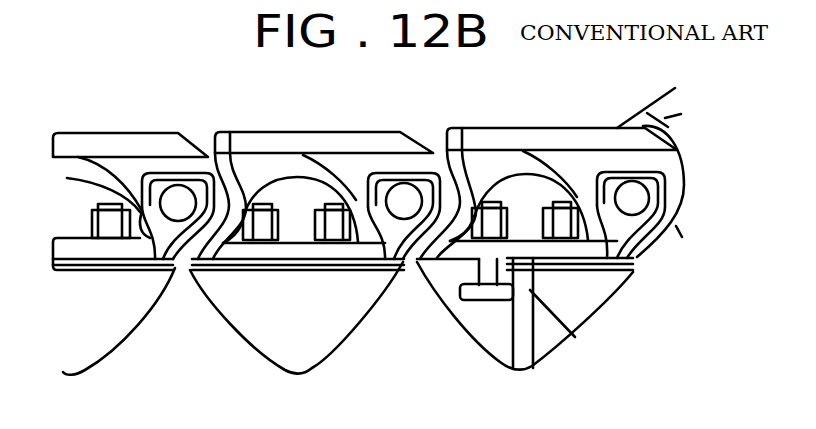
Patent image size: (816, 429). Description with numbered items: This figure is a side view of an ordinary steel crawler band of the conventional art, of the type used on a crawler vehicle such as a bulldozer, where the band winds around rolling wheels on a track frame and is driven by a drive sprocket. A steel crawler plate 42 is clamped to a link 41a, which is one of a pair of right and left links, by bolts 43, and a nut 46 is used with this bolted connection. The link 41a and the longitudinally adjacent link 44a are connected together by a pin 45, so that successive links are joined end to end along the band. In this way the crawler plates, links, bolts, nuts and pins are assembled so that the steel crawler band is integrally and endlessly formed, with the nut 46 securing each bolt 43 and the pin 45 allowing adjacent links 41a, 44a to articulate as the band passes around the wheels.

The link 41a is at (343, 143).
The link 44a is at (535, 128).
The pin 45 is at (403, 196).
The nut 46 is at (107, 218).
The steel crawler plate 42 is at (337, 335).
The bolt 43 is at (490, 296).